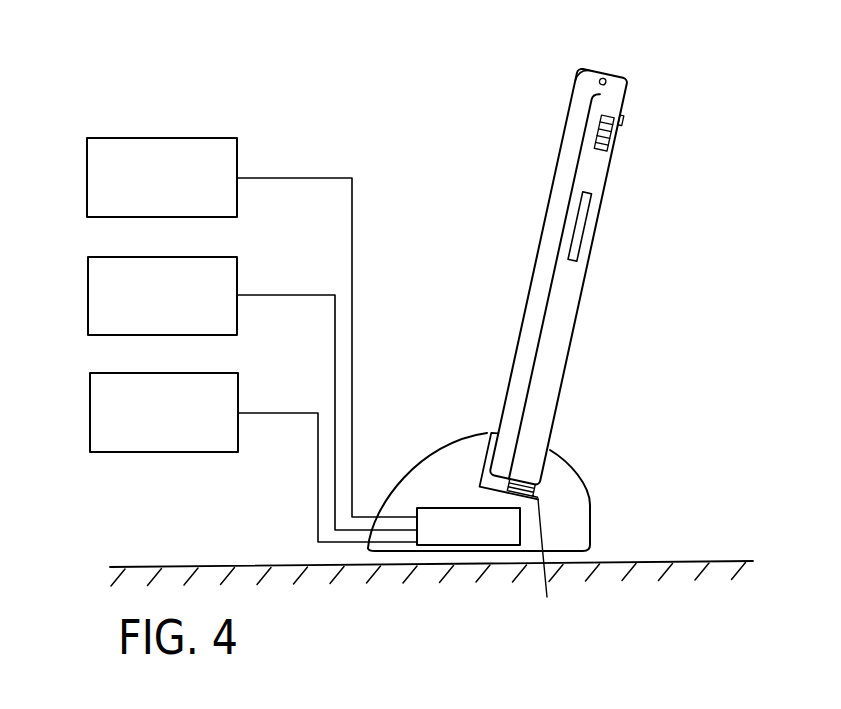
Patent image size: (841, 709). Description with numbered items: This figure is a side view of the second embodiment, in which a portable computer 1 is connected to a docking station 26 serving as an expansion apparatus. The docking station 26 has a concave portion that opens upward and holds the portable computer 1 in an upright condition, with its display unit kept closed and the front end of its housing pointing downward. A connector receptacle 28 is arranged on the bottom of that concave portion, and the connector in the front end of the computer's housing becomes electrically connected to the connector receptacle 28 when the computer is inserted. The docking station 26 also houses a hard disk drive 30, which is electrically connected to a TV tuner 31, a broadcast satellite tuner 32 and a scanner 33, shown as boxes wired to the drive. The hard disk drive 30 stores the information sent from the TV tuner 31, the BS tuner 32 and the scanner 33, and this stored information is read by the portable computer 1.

The portable computer 1 is at (585, 251).
The docking station 26 is at (590, 502).
The connector receptacle 28 is at (553, 566).
The hard disk drive 30 is at (470, 546).
The TV tuner 31 is at (87, 185).
The BS tuner 32 is at (88, 294).
The scanner 33 is at (90, 417).